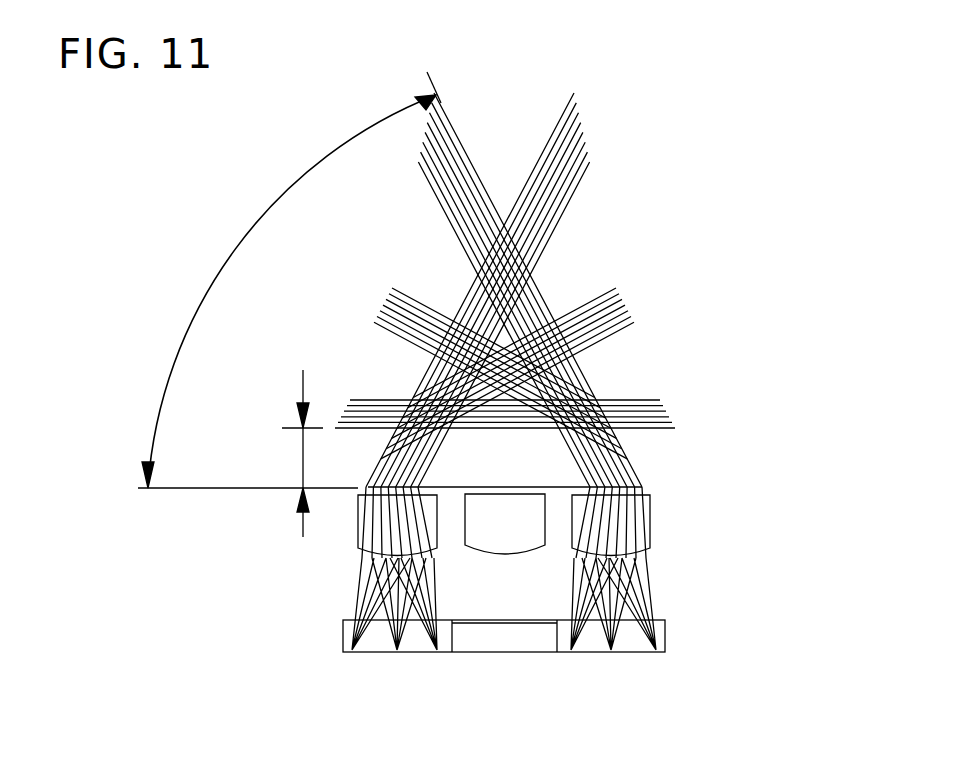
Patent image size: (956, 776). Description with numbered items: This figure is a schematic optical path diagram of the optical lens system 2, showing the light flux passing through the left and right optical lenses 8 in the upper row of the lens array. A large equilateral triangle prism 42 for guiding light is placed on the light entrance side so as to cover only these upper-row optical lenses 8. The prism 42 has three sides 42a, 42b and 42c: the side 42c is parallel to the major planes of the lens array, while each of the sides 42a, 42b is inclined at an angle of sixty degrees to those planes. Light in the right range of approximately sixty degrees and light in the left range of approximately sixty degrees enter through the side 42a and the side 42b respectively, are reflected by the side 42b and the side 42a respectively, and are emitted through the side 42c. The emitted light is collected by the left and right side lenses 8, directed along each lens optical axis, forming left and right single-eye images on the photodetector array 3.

The optical lens system 2 is at (718, 386).
The photodetector array 3 is at (662, 628).
The optical lens 8 is at (358, 521).
The equilateral triangle prism 42 is at (500, 323).
The side 42a is at (531, 296).
The side 42b is at (421, 378).
The side 42c is at (562, 488).